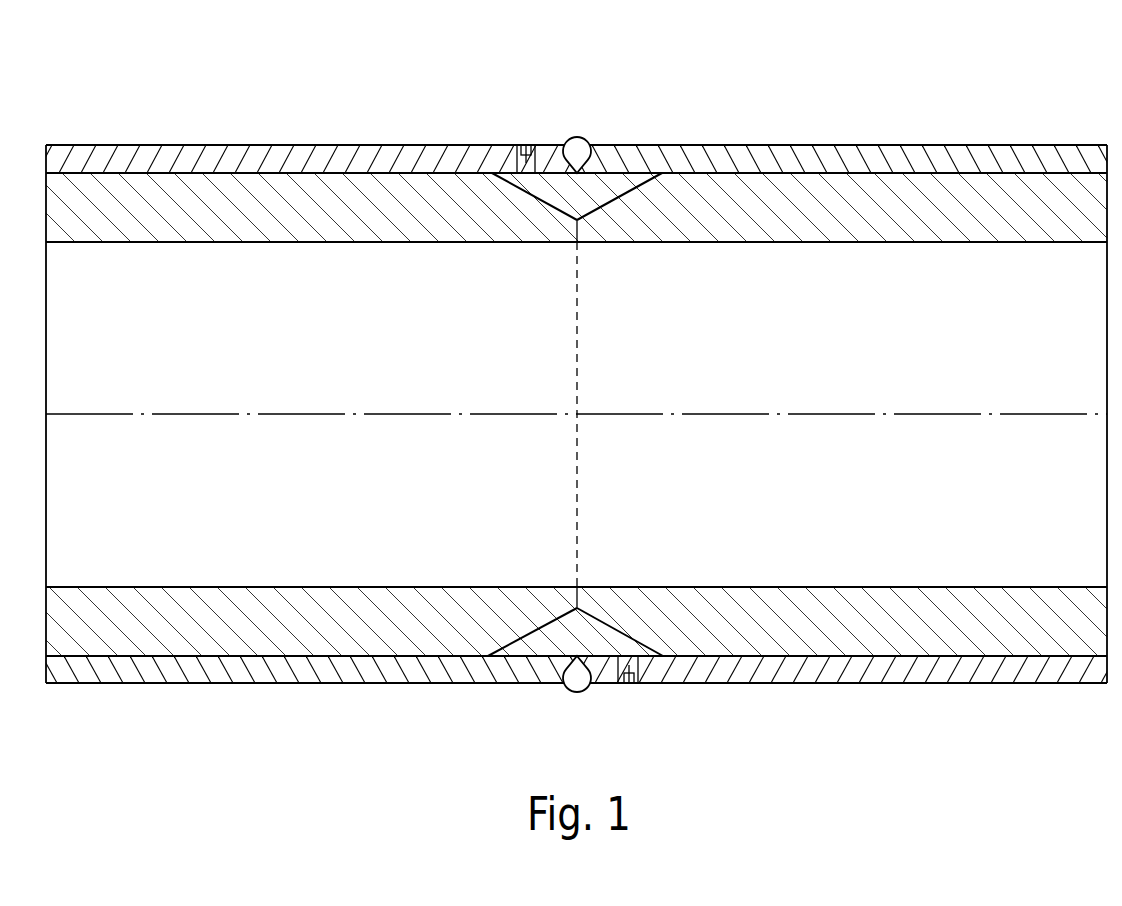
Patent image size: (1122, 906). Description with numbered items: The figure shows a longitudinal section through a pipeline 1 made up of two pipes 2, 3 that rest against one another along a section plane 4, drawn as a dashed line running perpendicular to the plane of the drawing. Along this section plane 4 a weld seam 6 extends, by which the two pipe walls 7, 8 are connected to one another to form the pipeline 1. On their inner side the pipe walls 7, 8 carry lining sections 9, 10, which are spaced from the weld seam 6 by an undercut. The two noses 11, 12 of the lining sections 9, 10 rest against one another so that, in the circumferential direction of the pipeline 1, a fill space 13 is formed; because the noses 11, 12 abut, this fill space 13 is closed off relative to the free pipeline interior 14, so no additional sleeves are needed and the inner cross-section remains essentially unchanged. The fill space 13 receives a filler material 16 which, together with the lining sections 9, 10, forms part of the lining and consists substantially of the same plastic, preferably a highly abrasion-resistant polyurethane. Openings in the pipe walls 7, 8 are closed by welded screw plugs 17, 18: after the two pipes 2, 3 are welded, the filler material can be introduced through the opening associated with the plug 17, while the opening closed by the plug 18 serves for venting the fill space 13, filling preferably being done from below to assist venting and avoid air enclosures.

The pipeline 1 is at (576, 403).
The pipe 2 is at (311, 434).
The pipe 3 is at (842, 437).
The section plane 4 is at (578, 363).
The weld seam 6 is at (578, 145).
The pipe wall 7 is at (217, 153).
The pipe wall 8 is at (937, 158).
The lining section 9 is at (195, 222).
The lining section 10 is at (1065, 215).
The nose 11 is at (535, 222).
The nose 12 is at (612, 222).
The fill space 13 is at (557, 635).
The free pipeline interior 14 is at (866, 493).
The filler material 16 is at (600, 635).
The screw plug 17 is at (527, 147).
The screw plug 18 is at (628, 685).